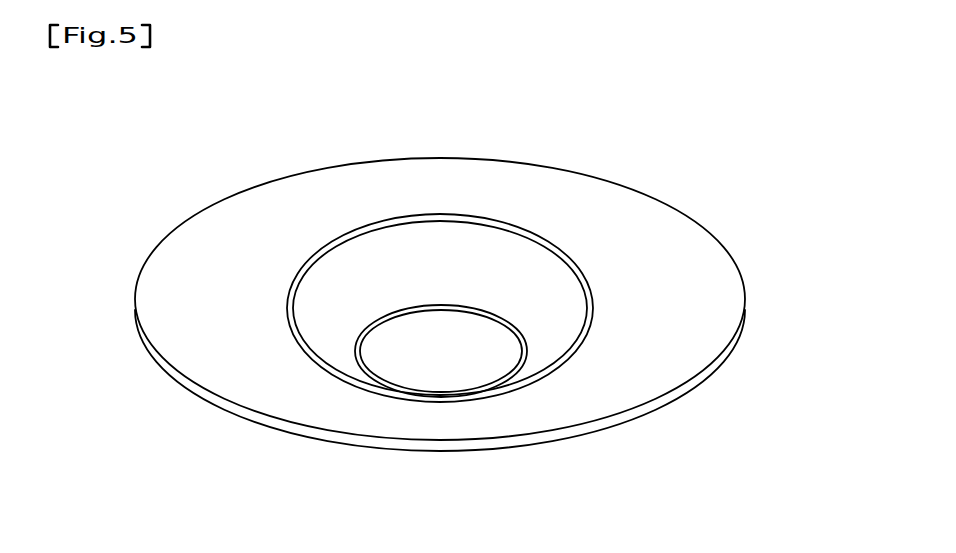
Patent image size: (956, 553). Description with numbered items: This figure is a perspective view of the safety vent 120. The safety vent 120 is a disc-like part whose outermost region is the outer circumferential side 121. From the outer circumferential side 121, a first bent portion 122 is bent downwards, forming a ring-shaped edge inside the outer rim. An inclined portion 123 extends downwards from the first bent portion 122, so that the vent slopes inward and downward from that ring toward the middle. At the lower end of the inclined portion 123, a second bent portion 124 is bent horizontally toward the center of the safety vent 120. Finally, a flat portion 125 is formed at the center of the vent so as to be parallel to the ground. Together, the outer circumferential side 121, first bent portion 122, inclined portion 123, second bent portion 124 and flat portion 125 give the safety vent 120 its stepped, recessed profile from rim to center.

The safety vent 120 is at (171, 153).
The outer circumferential side 121 is at (618, 237).
The first bent portion 122 is at (595, 297).
The inclined portion 123 is at (320, 292).
The second bent portion 124 is at (353, 377).
The flat portion 125 is at (492, 347).